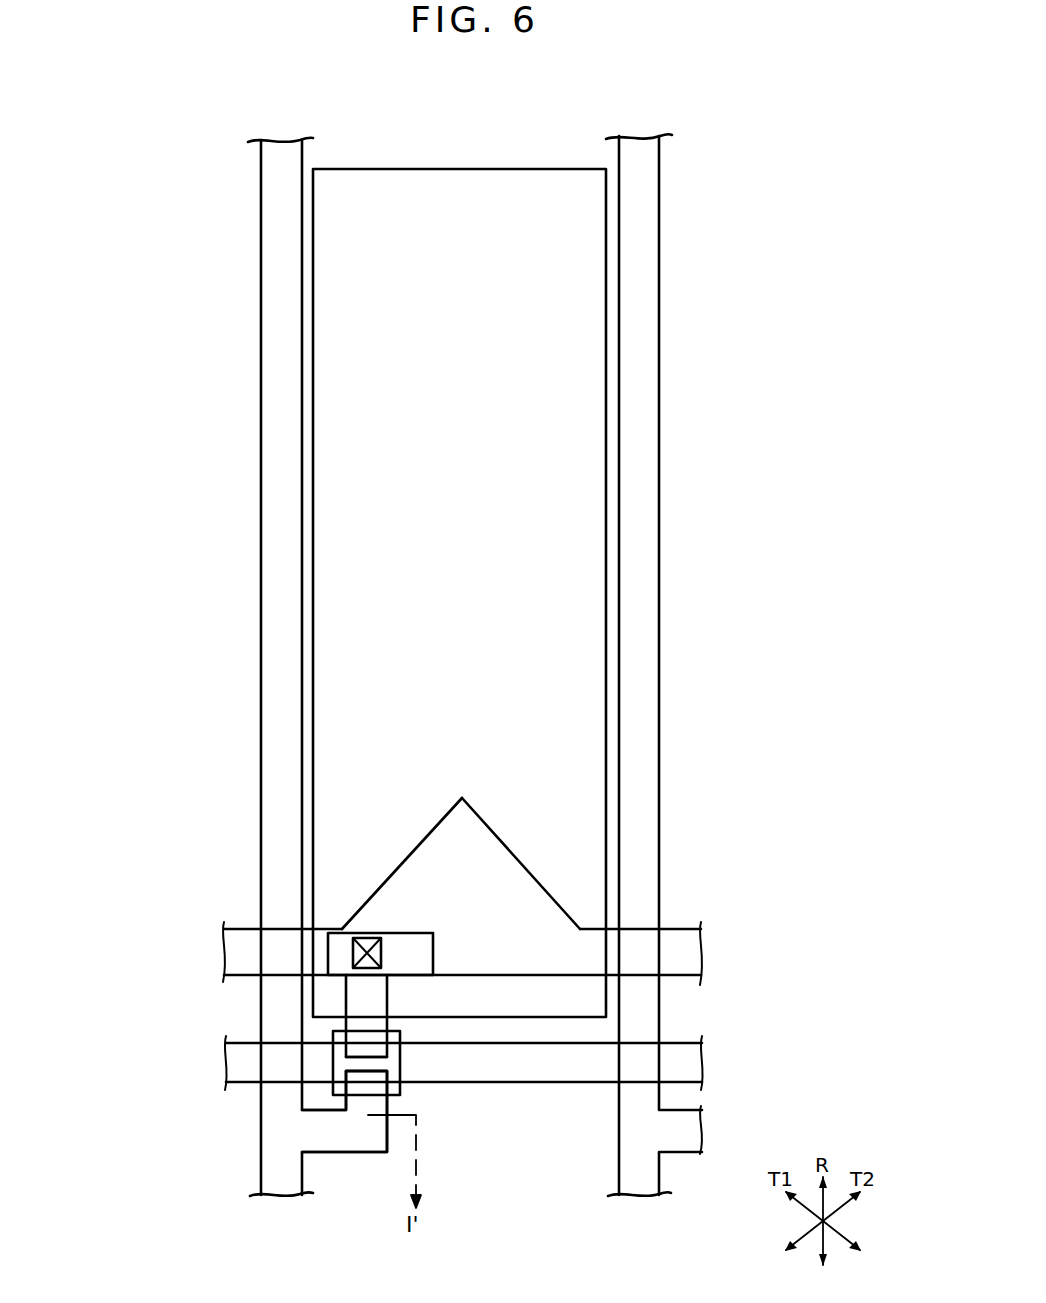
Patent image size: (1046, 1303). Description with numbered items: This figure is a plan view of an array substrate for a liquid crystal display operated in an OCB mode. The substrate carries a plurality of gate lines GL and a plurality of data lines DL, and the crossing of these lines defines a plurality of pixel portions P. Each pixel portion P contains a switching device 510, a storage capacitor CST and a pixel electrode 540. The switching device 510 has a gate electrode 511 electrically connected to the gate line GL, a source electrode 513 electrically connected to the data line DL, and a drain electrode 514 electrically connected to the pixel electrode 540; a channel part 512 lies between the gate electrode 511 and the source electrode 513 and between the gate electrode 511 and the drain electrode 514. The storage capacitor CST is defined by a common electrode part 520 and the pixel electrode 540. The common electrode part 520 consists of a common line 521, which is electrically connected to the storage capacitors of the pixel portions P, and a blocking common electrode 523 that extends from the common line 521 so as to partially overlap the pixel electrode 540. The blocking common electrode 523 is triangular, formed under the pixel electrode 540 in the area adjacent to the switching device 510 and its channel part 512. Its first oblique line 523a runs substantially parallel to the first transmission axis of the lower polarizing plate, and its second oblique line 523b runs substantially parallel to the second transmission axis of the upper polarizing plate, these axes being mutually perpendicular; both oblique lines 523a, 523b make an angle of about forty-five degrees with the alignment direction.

The pixel electrode 540 is at (353, 593).
The common electrode part 520 is at (158, 885).
The common line 521 is at (237, 955).
The blocking common electrode 523 is at (367, 845).
The first oblique line 523a is at (521, 845).
The second oblique line 523b is at (414, 846).
The switching device 510 is at (163, 1053).
The gate electrode 511 is at (347, 1062).
The channel part 512 is at (337, 1088).
The source electrode 513 is at (357, 1103).
The drain electrode 514 is at (353, 1025).
The storage capacitor CST is at (100, 642).
The gate line GL is at (692, 1062).
The data line DL is at (280, 1183).
The pixel portion P is at (443, 476).